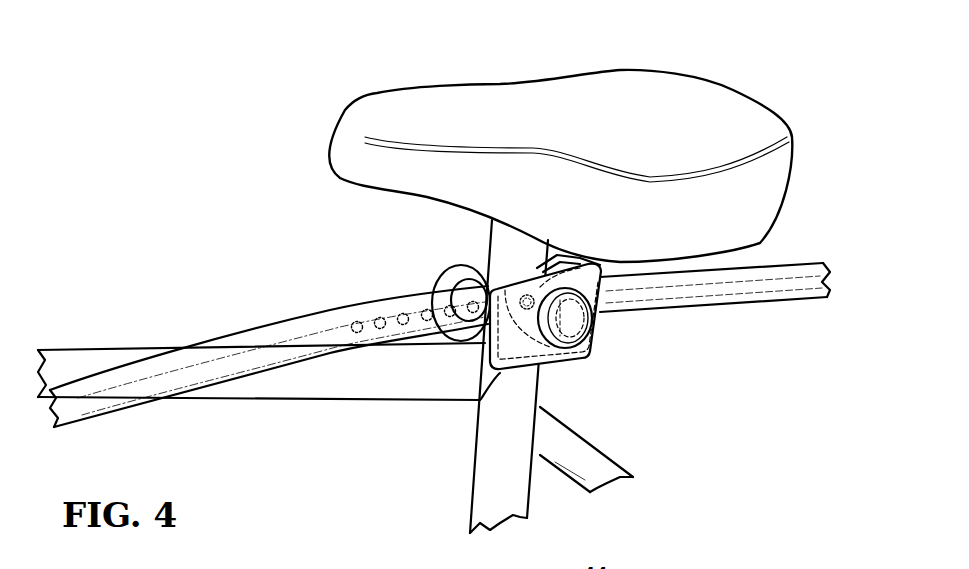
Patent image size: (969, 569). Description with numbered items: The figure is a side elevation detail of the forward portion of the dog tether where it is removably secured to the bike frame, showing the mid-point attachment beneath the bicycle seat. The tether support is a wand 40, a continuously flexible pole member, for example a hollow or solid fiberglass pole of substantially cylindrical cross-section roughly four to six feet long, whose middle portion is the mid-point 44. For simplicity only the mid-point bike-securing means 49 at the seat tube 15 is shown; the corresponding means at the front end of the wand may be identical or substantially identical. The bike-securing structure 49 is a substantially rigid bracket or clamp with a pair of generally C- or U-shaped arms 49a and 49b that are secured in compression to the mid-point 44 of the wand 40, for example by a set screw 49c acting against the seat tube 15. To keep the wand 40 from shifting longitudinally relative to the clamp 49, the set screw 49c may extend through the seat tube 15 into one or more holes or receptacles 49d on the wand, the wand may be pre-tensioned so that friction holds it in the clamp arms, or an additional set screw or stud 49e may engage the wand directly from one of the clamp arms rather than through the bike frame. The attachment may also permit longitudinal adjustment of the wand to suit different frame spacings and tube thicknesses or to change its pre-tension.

The seat tube 15 is at (493, 243).
The wand 40 is at (786, 282).
The mid-point 44 is at (497, 290).
The bike-securing structure 49 is at (598, 364).
The arm 49a is at (437, 280).
The arm 49b is at (560, 263).
The set screw 49c is at (578, 322).
The holes or receptacles 49d is at (402, 313).
The set screw or stud 49e is at (472, 322).